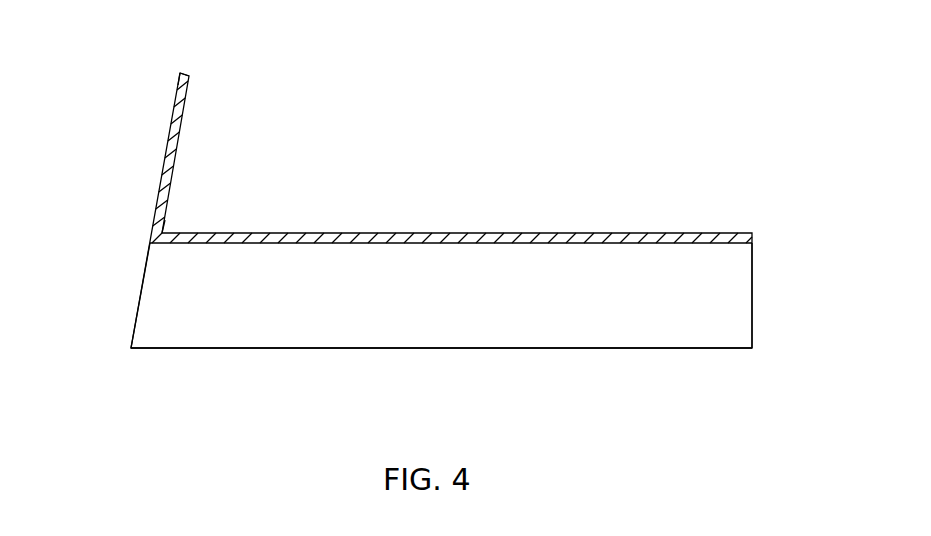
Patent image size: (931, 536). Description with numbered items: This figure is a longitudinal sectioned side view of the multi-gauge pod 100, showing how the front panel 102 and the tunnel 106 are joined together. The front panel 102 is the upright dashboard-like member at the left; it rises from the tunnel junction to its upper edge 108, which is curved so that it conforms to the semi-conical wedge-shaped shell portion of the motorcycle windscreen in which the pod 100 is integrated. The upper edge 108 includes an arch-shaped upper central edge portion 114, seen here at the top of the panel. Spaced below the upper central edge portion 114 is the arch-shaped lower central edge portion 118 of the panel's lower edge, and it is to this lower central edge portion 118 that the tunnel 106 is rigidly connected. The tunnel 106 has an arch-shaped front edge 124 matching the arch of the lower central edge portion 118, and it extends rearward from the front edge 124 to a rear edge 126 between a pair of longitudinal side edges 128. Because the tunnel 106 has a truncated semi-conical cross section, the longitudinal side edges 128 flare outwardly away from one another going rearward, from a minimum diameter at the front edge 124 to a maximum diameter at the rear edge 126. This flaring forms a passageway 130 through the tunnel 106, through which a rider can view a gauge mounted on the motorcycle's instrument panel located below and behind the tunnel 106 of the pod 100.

The multi-gauge pod 100 is at (521, 81).
The front panel 102 is at (186, 128).
The tunnel 106 is at (450, 229).
The upper edge 108 is at (191, 70).
The upper central edge portion 114 is at (180, 72).
The lower central edge portion 118 is at (142, 270).
The front edge 124 is at (163, 233).
The rear edge 126 is at (752, 281).
The longitudinal side edges 128 is at (480, 348).
The passageway 130 is at (164, 313).